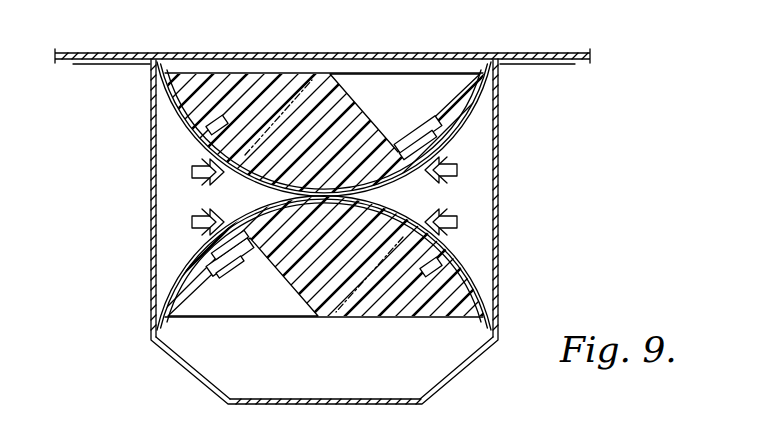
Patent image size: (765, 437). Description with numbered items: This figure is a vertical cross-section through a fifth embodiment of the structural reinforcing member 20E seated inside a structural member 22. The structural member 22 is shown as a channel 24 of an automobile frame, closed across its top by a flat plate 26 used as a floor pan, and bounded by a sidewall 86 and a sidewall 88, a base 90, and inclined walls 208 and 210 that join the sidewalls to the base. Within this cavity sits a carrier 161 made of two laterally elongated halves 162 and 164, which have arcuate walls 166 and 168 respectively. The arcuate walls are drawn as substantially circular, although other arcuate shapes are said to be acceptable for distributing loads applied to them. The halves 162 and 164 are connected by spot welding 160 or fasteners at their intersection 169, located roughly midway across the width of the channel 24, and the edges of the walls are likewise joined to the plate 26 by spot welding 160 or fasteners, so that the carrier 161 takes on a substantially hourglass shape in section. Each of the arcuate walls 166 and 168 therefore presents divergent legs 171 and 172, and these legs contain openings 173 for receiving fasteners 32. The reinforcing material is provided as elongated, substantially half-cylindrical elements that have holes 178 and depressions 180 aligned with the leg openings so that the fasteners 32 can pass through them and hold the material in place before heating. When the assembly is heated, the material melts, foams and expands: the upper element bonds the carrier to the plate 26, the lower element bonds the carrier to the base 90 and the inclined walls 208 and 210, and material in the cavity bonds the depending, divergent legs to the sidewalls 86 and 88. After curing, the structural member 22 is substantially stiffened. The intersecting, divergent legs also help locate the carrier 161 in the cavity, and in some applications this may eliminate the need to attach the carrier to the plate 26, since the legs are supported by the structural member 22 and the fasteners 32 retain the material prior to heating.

The reinforcing member 20E is at (477, 116).
The structural member 22 is at (502, 190).
The channel 24 is at (500, 240).
The plate 26 is at (350, 53).
The fasteners 32 is at (190, 176).
The sidewall 86 is at (497, 284).
The sidewall 88 is at (150, 292).
The base 90 is at (310, 399).
The spot welding 160 is at (163, 62).
The carrier 161 is at (230, 220).
The half 162 is at (188, 104).
The half 164 is at (160, 336).
The arcuate wall 166 is at (188, 128).
The arcuate wall 168 is at (470, 253).
The intersection 169 is at (353, 130).
The divergent leg 171 is at (455, 112).
The divergent leg 172 is at (183, 92).
The openings 173 is at (205, 240).
The holes 178 is at (205, 254).
The depressions 180 is at (409, 70).
The inclined wall 208 is at (482, 356).
The inclined wall 210 is at (190, 370).